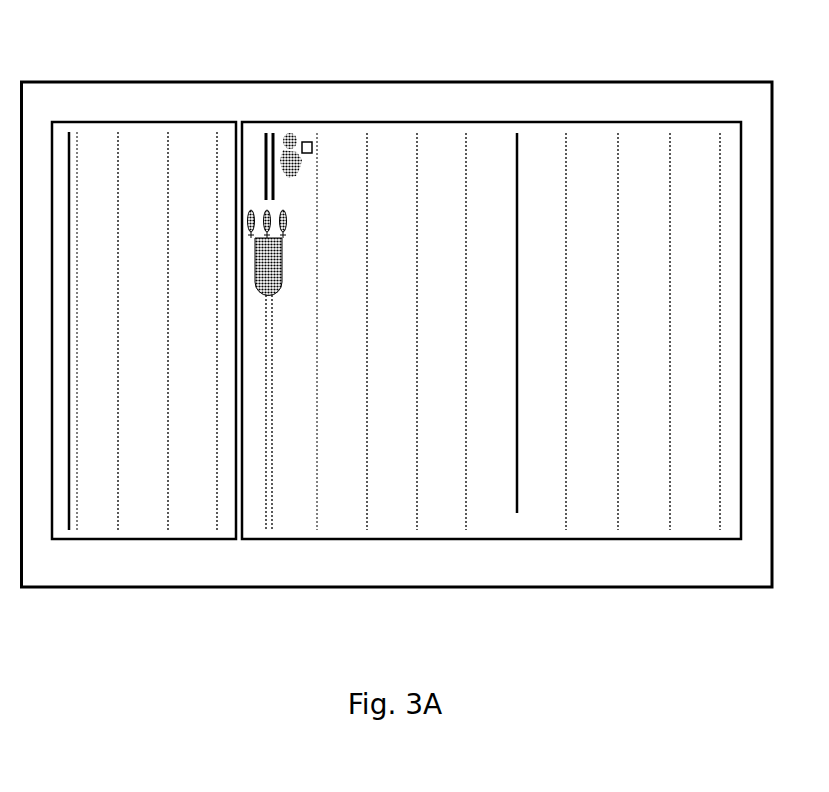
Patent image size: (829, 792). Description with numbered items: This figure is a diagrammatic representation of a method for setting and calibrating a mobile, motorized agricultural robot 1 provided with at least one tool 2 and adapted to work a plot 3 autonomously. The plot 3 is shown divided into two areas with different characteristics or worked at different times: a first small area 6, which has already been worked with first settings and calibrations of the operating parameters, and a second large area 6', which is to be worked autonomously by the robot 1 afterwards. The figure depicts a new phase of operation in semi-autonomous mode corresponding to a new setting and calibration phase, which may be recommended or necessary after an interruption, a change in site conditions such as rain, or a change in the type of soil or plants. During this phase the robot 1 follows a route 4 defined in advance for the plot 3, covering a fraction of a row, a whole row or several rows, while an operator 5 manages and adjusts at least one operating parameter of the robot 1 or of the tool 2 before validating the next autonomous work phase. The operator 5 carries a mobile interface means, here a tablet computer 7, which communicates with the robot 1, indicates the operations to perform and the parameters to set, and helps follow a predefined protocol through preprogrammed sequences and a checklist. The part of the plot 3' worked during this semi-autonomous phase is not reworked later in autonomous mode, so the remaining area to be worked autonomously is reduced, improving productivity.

The agricultural robot 1 is at (255, 270).
The tool 2 is at (238, 198).
The plot 3 is at (396, 404).
The part of the plot worked in semi-autonomous mode 3' is at (182, 335).
The route 4 is at (268, 473).
The operator 5 is at (300, 124).
The first area of the plot 6 is at (144, 387).
The second area of the plot 6' is at (491, 387).
The tablet computer 7 is at (311, 140).